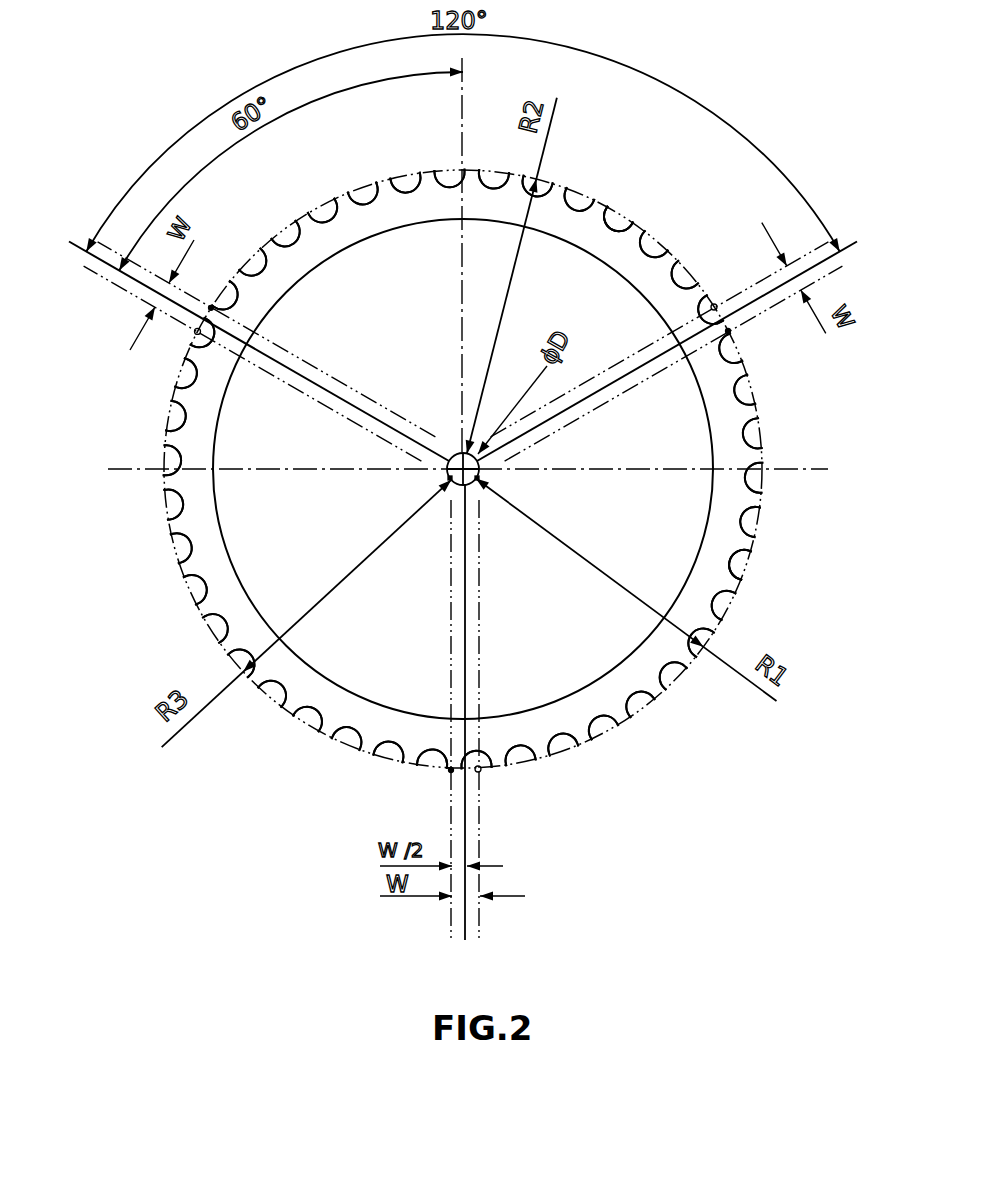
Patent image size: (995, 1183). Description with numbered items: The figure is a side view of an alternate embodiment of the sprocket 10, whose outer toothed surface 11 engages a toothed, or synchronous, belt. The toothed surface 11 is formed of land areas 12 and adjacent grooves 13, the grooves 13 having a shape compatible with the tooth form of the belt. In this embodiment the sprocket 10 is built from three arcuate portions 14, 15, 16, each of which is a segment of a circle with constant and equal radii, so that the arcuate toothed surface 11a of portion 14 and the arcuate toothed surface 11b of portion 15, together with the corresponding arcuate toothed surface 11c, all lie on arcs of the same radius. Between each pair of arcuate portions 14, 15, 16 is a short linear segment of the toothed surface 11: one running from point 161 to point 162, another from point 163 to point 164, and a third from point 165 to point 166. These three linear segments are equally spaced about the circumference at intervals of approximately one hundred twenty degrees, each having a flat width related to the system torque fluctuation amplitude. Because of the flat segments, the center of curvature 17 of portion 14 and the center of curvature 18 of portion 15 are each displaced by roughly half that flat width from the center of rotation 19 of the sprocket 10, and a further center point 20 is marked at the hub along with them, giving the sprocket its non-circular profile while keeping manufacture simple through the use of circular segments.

The sprocket 10 is at (617, 627).
The toothed surface 11 is at (480, 459).
The arcuate toothed surface 11a is at (729, 607).
The arcuate toothed surface 11b is at (582, 193).
The third peripheral portion 11c is at (190, 592).
The land areas 12 is at (642, 225).
The grooves 13 is at (690, 272).
The arcuate portion 14 is at (733, 543).
The arcuate portion 15 is at (592, 225).
The arcuate portion 16 is at (193, 400).
The point 161 is at (450, 770).
The point 162 is at (481, 773).
The point 163 is at (713, 304).
The point 164 is at (729, 333).
The point 165 is at (194, 334).
The point 166 is at (211, 305).
The center of curvature 17 is at (481, 470).
The center of curvature 18 is at (449, 478).
The center of rotation 19 is at (461, 450).
The second center point 20 is at (478, 480).